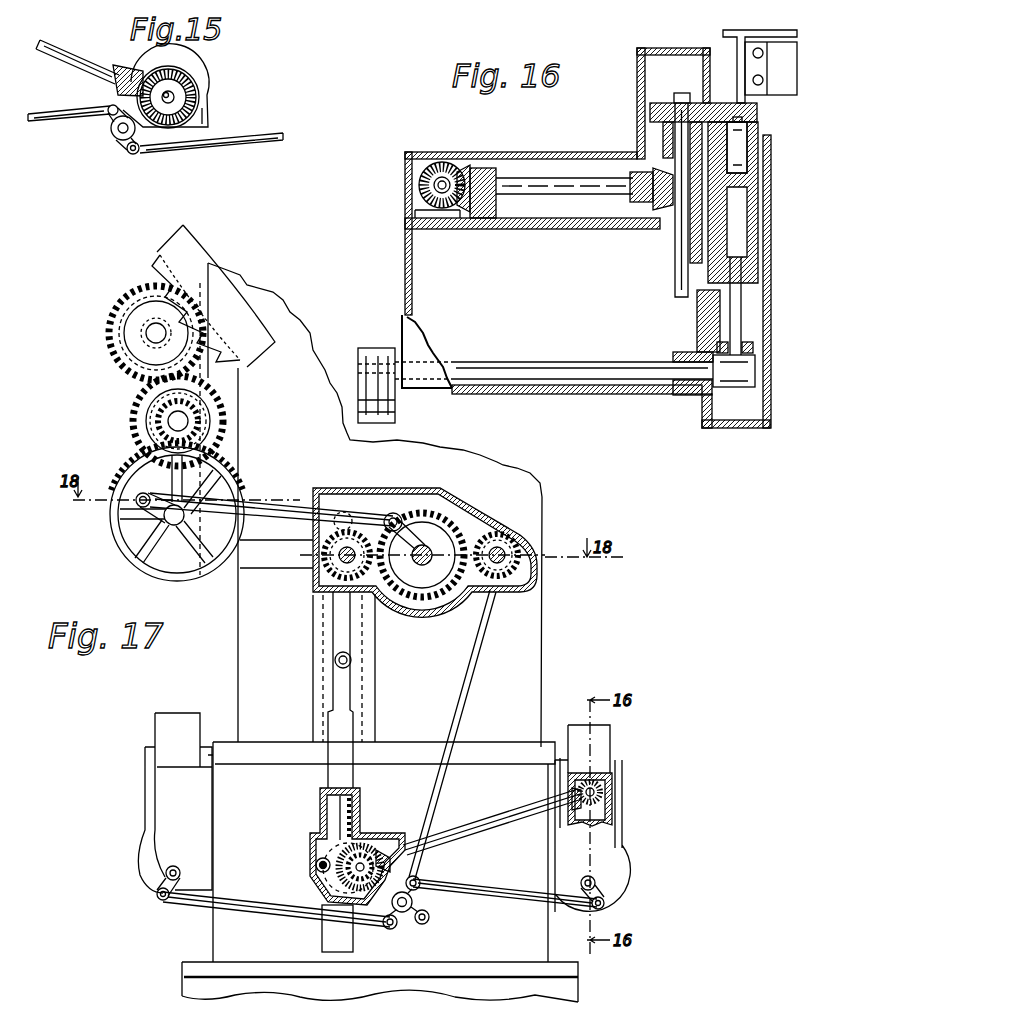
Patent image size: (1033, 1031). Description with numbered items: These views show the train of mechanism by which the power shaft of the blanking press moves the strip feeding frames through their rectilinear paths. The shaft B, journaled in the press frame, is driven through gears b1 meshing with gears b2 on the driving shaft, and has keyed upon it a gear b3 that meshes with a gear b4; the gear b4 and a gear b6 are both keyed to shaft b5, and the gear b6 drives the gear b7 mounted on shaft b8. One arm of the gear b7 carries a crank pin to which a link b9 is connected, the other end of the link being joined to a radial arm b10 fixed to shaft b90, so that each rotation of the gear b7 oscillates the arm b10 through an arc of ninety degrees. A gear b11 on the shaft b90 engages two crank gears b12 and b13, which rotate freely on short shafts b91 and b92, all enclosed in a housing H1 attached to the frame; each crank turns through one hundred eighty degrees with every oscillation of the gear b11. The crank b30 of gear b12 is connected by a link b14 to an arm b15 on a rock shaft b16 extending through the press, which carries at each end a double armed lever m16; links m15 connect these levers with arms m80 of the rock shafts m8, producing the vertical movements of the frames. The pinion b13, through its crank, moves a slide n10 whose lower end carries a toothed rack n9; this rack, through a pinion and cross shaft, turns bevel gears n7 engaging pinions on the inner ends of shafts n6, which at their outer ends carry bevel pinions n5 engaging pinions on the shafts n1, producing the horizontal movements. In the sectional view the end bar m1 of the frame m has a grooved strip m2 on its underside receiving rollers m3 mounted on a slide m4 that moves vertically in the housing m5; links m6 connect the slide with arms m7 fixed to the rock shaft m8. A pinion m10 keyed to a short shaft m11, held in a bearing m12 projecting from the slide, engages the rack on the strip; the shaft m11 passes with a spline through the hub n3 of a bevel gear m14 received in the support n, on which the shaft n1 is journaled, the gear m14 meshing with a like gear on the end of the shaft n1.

In FIG. 15, the shaft n6 is at (68, 56).
In FIG. 15, the rock shaft m8 is at (172, 97).
In FIG. 16, the rock shaft m8 is at (568, 362).
In FIG. 17, the rock shaft m8 is at (378, 838).
In FIG. 15, the link m15 is at (55, 114).
In FIG. 17, the link m15 is at (240, 905).
In FIG. 15, the double armed lever m16 is at (112, 127).
In FIG. 17, the double armed lever m16 is at (391, 929).
In FIG. 15, the rock shaft b16 is at (128, 152).
In FIG. 17, the rock shaft b16 is at (422, 902).
In FIG. 16, the housing m5 is at (422, 152).
In FIG. 16, the link m6 is at (445, 176).
In FIG. 17, the link m6 is at (498, 824).
In FIG. 16, the shaft n1 is at (548, 190).
In FIG. 17, the shaft n1 is at (605, 790).
In FIG. 16, the pinion m10 is at (652, 100).
In FIG. 16, the bearing m12 is at (665, 147).
In FIG. 17, the bearing m12 is at (333, 597).
In FIG. 16, the grooved strip m2 is at (755, 115).
In FIG. 16, the end bar m1 is at (726, 38).
In FIG. 16, the frame member m is at (782, 69).
In FIG. 16, the guiding and supporting roller m3 is at (750, 155).
In FIG. 16, the slide m4 is at (772, 207).
In FIG. 16, the bevel gear m14 is at (752, 205).
In FIG. 16, the bevel pinion n5 is at (433, 233).
In FIG. 16, the support n is at (543, 235).
In FIG. 16, the hub n3 is at (657, 250).
In FIG. 16, the short shaft m11 is at (670, 295).
In FIG. 17, the short shaft m11 is at (347, 903).
In FIG. 16, the arm m7 is at (715, 347).
In FIG. 16, the arm m80 is at (398, 427).
In FIG. 17, the arm m80 is at (158, 893).
In FIG. 17, the gear b1 is at (170, 253).
In FIG. 17, the gear b2 is at (155, 277).
In FIG. 17, the shaft B is at (148, 331).
In FIG. 17, the gear b3 is at (127, 368).
In FIG. 17, the gear b4 is at (143, 410).
In FIG. 17, the shaft b5 is at (182, 420).
In FIG. 17, the gear b6 is at (195, 437).
In FIG. 17, the gear b7 is at (235, 475).
In FIG. 17, the shaft b8 is at (165, 523).
In FIG. 17, the link b9 is at (283, 490).
In FIG. 17, the housing H1 is at (467, 505).
In FIG. 17, the radial arm b10 is at (400, 515).
In FIG. 17, the gear b11 is at (425, 612).
In FIG. 17, the shaft b90 is at (421, 562).
In FIG. 17, the crank gear b13 is at (333, 578).
In FIG. 17, the short shaft b92 is at (340, 555).
In FIG. 17, the crank gear b12 is at (515, 568).
In FIG. 17, the short shaft b91 is at (502, 550).
In FIG. 17, the crank b30 is at (500, 538).
In FIG. 17, the link b14 is at (492, 607).
In FIG. 17, the slide n10 is at (343, 700).
In FIG. 17, the toothed rack n9 is at (360, 813).
In FIG. 17, the bevel gear n7 is at (367, 835).
In FIG. 17, the arm b15 is at (416, 921).